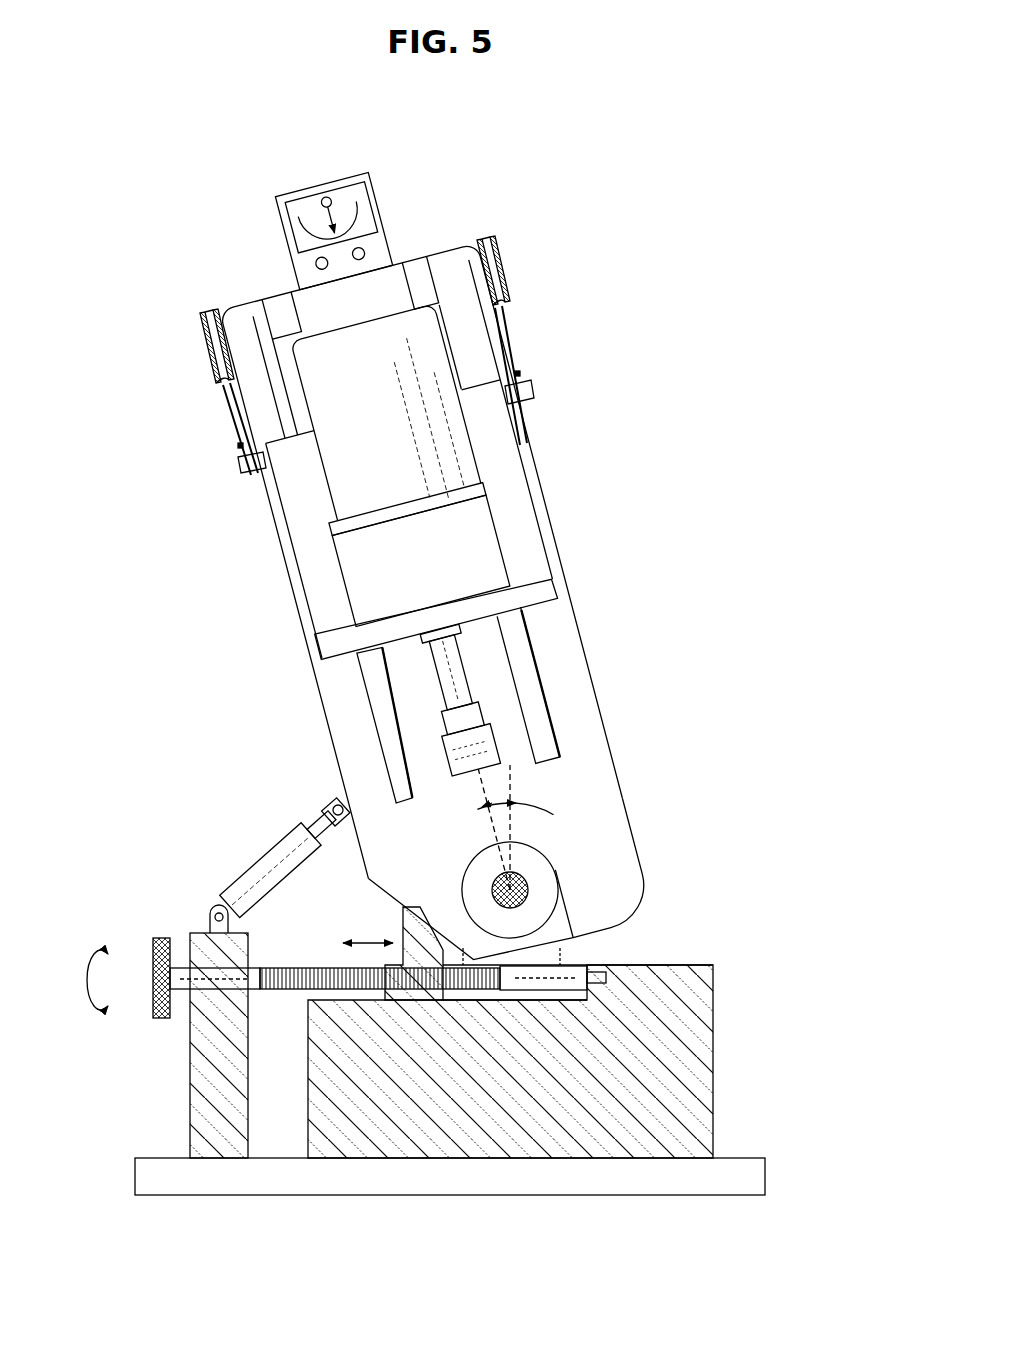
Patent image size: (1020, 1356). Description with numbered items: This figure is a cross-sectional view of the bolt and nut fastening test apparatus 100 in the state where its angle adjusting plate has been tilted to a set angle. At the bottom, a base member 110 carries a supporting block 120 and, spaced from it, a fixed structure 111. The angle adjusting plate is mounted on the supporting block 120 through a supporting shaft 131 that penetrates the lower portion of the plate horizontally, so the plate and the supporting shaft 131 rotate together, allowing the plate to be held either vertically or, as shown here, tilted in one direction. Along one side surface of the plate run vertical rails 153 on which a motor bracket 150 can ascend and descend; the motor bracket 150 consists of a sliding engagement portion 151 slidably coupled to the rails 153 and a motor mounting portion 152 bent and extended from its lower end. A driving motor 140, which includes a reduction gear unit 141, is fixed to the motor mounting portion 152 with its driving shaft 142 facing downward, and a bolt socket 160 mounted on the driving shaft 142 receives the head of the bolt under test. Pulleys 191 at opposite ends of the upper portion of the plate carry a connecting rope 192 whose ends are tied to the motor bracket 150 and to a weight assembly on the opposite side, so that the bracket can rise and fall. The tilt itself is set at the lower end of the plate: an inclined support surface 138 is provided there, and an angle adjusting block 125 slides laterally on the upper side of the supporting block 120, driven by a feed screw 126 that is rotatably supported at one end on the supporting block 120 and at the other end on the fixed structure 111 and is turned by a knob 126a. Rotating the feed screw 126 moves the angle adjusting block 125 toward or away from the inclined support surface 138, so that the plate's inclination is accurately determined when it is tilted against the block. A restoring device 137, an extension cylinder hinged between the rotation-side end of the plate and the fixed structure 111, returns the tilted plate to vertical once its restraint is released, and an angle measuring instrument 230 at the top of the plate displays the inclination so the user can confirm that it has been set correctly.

The bolt and nut fastening test apparatus 100 is at (106, 714).
The base member 110 is at (578, 1196).
The fixed structure 111 is at (205, 1068).
The supporting block 120 is at (703, 1028).
The angle adjusting block 125 is at (382, 928).
The feed screw 126 is at (283, 992).
The knob 126a is at (150, 945).
The supporting shaft 131 is at (530, 878).
The restoring device 137 is at (262, 862).
The inclined support surface 138 is at (378, 905).
The driving motor 140 is at (470, 448).
The reduction gear unit 141 is at (482, 537).
The driving shaft 142 is at (470, 668).
The motor bracket 150 is at (303, 578).
The sliding engagement portion 151 is at (297, 523).
The motor mounting portion 152 is at (327, 645).
The rails 153 is at (272, 313).
The bolt socket 160 is at (495, 745).
The pulleys 191 is at (503, 268).
The connecting rope 192 is at (522, 343).
The angle measuring instrument 230 is at (353, 197).